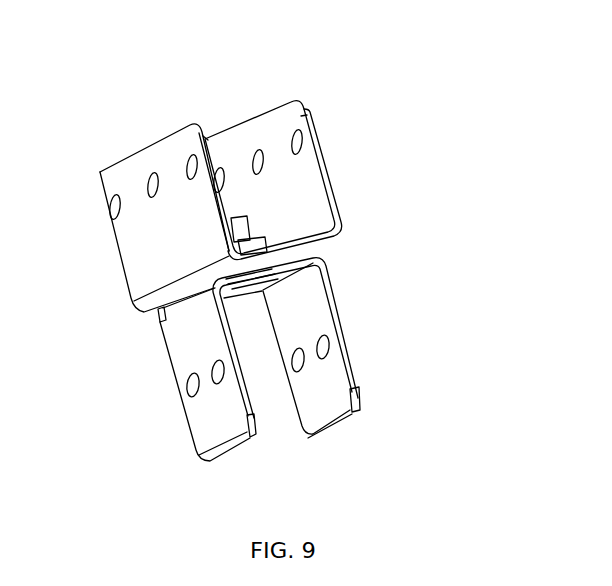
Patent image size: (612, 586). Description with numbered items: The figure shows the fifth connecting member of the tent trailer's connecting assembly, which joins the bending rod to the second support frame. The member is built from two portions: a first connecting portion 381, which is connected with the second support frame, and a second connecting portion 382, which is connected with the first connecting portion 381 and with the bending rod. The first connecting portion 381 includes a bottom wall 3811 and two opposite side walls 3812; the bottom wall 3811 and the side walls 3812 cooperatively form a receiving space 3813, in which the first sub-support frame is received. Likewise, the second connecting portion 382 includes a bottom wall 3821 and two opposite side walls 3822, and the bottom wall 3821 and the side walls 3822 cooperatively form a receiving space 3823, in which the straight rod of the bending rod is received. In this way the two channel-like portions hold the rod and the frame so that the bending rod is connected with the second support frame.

The first connecting portion 381 is at (167, 333).
The bottom wall 3811 is at (215, 287).
The side walls 3812 is at (357, 361).
The receiving space 3813 is at (288, 447).
The second connecting portion 382 is at (148, 230).
The bottom wall 3821 is at (305, 249).
The side walls 3822 is at (327, 175).
The receiving space 3823 is at (205, 92).